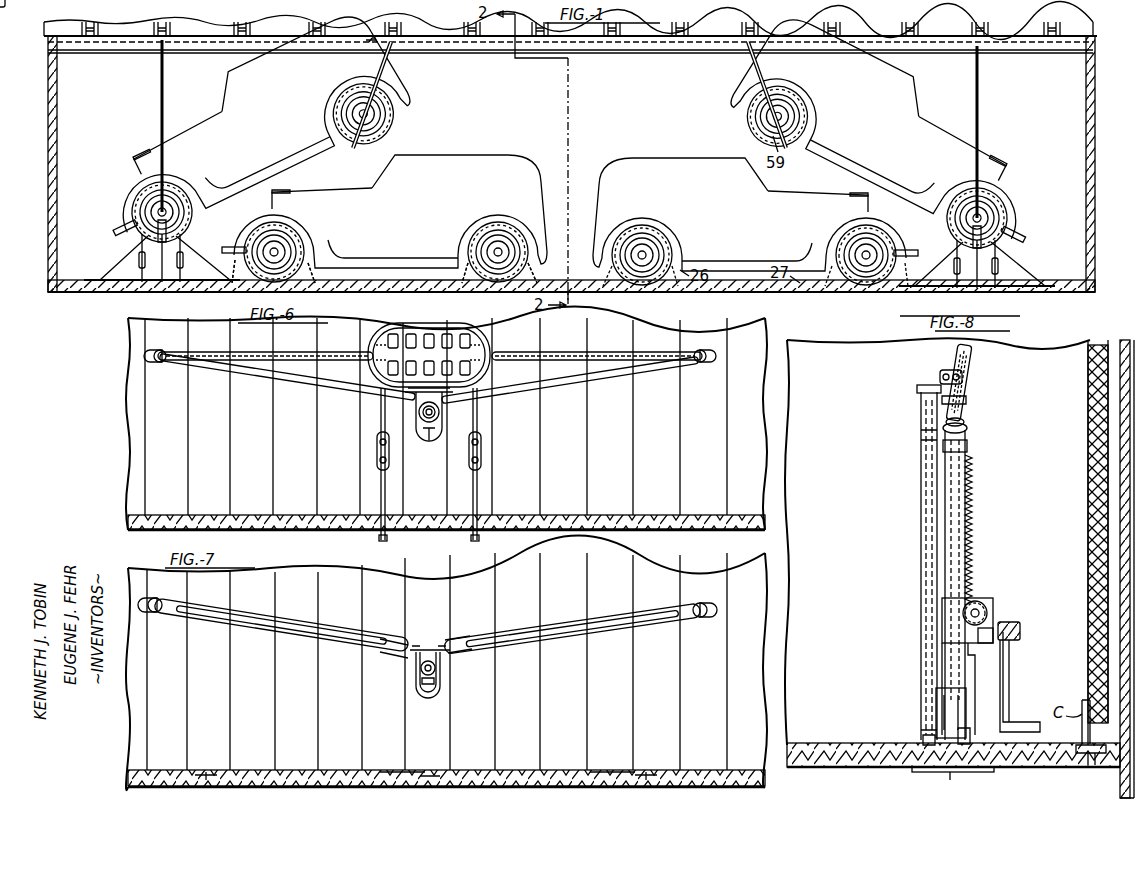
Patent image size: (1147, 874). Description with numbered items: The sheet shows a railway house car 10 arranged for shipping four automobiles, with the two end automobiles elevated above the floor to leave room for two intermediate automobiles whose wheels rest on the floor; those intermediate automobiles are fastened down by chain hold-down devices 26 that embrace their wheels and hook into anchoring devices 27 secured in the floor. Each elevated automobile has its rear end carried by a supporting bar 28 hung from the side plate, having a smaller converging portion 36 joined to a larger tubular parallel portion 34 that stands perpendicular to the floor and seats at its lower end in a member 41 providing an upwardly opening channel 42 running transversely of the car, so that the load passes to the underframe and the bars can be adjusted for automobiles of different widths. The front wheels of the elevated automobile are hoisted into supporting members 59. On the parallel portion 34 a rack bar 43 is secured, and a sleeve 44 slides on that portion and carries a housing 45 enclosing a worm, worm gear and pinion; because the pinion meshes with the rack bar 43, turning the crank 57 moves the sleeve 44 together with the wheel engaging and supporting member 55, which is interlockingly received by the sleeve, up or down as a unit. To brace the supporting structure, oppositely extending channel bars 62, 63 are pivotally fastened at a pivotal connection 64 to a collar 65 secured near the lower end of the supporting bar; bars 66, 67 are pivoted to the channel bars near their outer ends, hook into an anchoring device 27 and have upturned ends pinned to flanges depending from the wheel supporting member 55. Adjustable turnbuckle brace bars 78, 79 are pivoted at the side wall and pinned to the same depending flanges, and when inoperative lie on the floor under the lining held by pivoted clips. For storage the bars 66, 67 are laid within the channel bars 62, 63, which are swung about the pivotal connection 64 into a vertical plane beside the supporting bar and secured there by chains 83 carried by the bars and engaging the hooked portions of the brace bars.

In FIG. 1, the railway house car 10 is at (1093, 150).
In FIG. 1, the chain hold-down devices 26 is at (191, 210).
In FIG. 1, the anchoring devices 27 is at (442, 283).
In FIG. 1, the supporting members 59 is at (371, 136).
In FIG. 6, the bar 66 is at (223, 357).
In FIG. 7, the bar 66 is at (297, 628).
In FIG. 6, the bar 67 is at (588, 356).
In FIG. 7, the bar 67 is at (563, 627).
In FIG. 6, the channel bar 62 is at (297, 378).
In FIG. 7, the channel bar 62 is at (385, 640).
In FIG. 8, the channel bar 62 is at (928, 548).
In FIG. 6, the channel bar 63 is at (578, 382).
In FIG. 7, the channel bar 63 is at (465, 640).
In FIG. 6, the wheel engaging and supporting member 55 is at (458, 334).
In FIG. 6, the supporting bar 28 is at (417, 424).
In FIG. 6, the members 41 is at (441, 433).
In FIG. 7, the members 41 is at (444, 685).
In FIG. 8, the members 41 is at (975, 770).
In FIG. 6, the housing 45 is at (432, 446).
In FIG. 8, the housing 45 is at (1002, 597).
In FIG. 6, the brace bar 78 is at (380, 487).
In FIG. 7, the brace bar 78 is at (205, 768).
In FIG. 6, the brace bar 79 is at (481, 491).
In FIG. 7, the brace bar 79 is at (645, 770).
In FIG. 7, the pivotal connection 64 is at (431, 650).
In FIG. 8, the pivotal connection 64 is at (925, 738).
In FIG. 7, the collar 65 is at (447, 668).
In FIG. 8, the collar 65 is at (968, 735).
In FIG. 7, the upwardly opening channel 42 is at (428, 693).
In FIG. 8, the chains 83 is at (947, 372).
In FIG. 8, the converging portion 36 is at (979, 369).
In FIG. 8, the parallel portion 34 is at (956, 503).
In FIG. 8, the rack bar 43 is at (972, 560).
In FIG. 8, the sleeve 44 is at (955, 672).
In FIG. 8, the crank 57 is at (1014, 692).